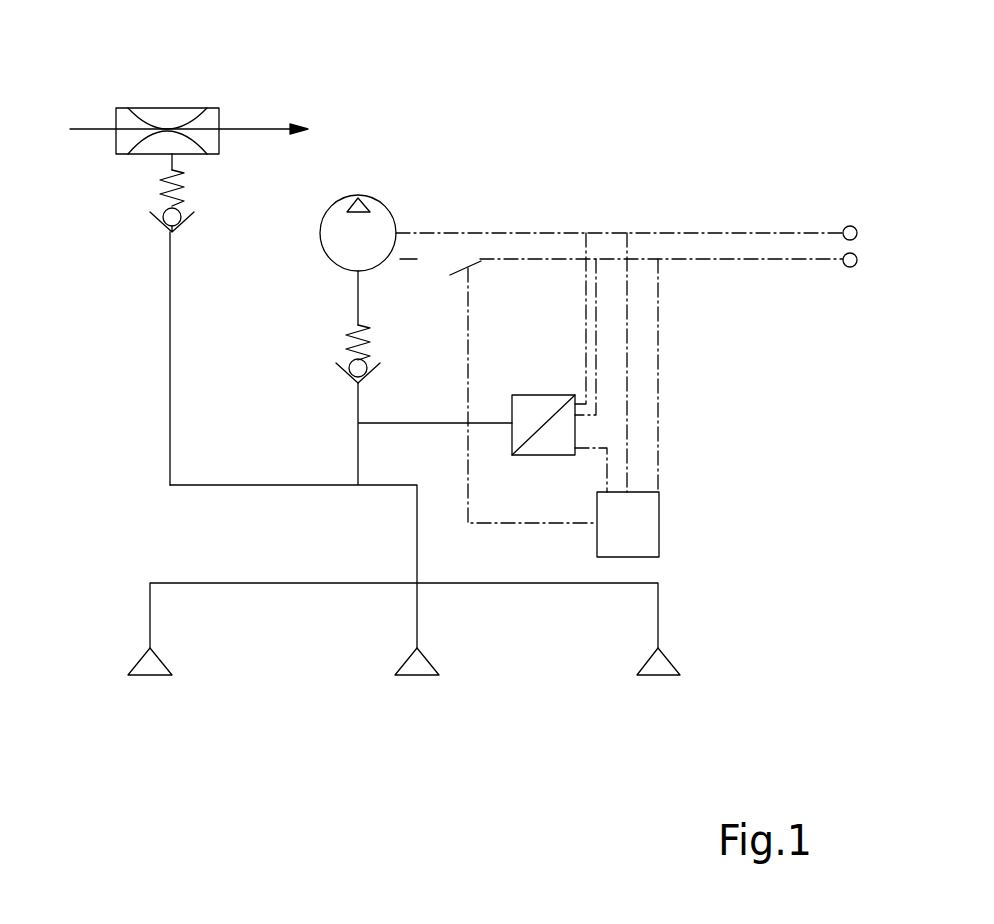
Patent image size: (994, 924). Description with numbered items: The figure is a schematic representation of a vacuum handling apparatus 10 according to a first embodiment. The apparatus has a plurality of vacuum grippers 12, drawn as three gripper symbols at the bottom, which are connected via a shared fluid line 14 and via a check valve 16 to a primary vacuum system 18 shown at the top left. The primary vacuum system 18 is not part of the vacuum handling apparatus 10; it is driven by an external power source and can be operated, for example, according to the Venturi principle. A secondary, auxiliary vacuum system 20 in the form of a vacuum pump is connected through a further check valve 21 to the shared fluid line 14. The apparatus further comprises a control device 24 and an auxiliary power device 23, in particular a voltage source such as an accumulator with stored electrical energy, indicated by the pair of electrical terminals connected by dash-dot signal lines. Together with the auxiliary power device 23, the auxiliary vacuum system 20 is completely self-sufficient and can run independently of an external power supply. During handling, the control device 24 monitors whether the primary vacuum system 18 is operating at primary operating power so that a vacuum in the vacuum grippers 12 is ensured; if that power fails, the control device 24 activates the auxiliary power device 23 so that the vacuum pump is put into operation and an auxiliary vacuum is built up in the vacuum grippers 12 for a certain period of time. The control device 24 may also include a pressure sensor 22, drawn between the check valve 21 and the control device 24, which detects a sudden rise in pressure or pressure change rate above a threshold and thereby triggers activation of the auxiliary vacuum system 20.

The vacuum handling apparatus 10 is at (76, 452).
The vacuum grippers 12 is at (143, 676).
The shared fluid line 14 is at (170, 417).
The check valve 16 is at (160, 218).
The primary vacuum system 18 is at (183, 108).
The auxiliary vacuum system 20 is at (388, 213).
The check valve 21 is at (370, 367).
The pressure sensor 22 is at (575, 430).
The auxiliary power device 23 is at (872, 228).
The control device 24 is at (660, 532).